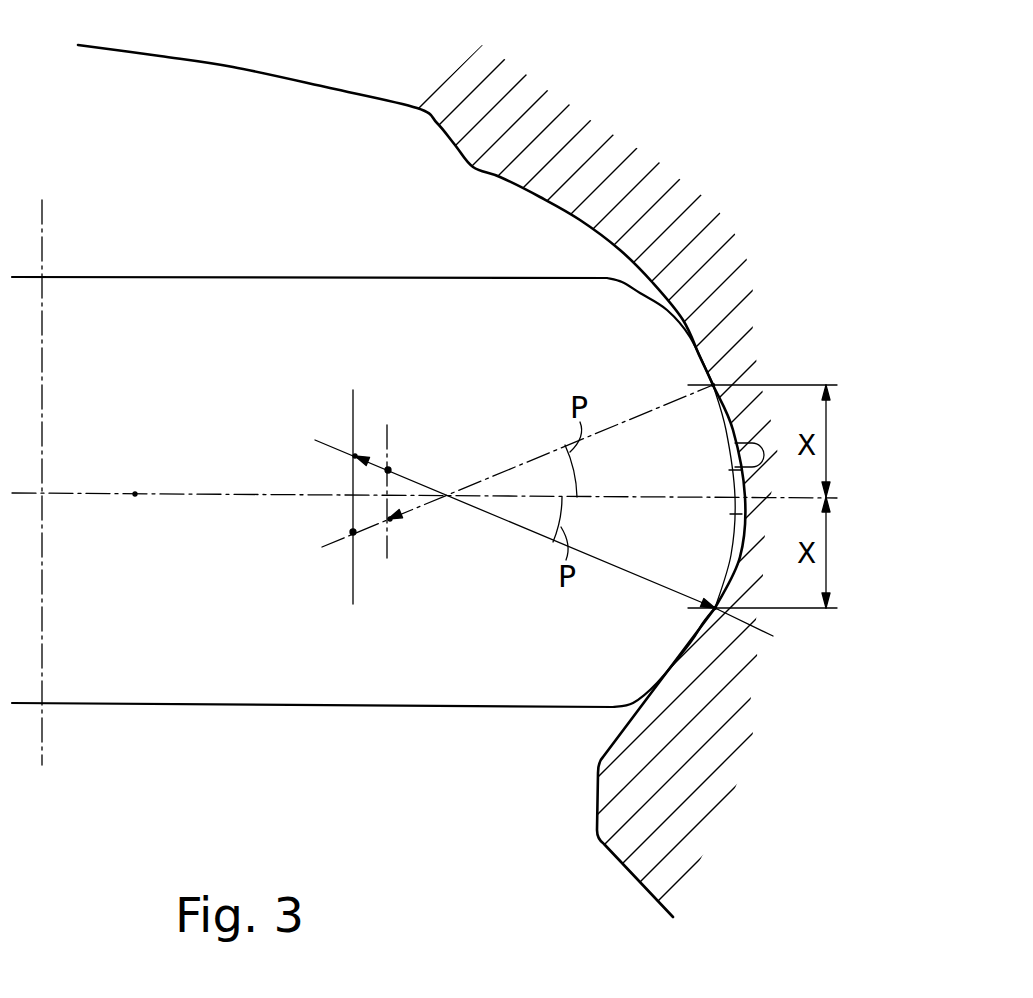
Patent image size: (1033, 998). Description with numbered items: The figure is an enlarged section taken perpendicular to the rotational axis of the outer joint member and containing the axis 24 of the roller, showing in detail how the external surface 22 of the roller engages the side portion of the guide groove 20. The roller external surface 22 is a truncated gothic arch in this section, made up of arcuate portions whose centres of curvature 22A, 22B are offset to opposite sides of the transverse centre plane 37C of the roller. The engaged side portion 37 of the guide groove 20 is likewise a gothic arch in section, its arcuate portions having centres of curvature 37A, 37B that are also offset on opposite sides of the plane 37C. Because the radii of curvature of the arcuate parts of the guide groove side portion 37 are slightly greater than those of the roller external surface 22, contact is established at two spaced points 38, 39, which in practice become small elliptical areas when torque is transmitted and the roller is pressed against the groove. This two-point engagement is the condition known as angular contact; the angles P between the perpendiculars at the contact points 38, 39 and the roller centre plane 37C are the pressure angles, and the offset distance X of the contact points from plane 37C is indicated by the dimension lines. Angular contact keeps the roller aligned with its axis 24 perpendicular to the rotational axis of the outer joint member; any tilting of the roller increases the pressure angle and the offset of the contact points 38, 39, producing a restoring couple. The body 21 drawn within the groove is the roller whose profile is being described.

The guide groove 20 is at (525, 215).
The piston 21 is at (453, 688).
The external surface of the roller 22 is at (735, 443).
The centre of curvature 22A is at (392, 518).
The centre of curvature 22B is at (388, 470).
The axis of the roller 24 is at (45, 737).
The guide groove side portion 37 is at (733, 512).
The centre of curvature 37A is at (353, 532).
The centre of curvature 37B is at (355, 455).
The transverse centre plane of the roller 37C is at (135, 494).
The contact point 38 is at (713, 385).
The contact point 39 is at (713, 608).